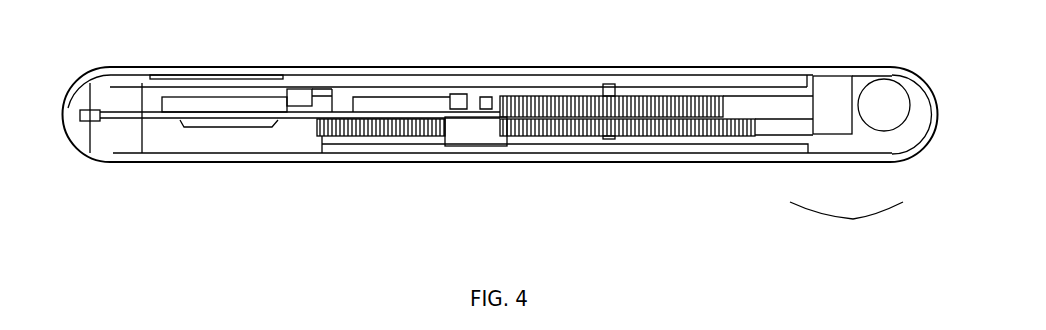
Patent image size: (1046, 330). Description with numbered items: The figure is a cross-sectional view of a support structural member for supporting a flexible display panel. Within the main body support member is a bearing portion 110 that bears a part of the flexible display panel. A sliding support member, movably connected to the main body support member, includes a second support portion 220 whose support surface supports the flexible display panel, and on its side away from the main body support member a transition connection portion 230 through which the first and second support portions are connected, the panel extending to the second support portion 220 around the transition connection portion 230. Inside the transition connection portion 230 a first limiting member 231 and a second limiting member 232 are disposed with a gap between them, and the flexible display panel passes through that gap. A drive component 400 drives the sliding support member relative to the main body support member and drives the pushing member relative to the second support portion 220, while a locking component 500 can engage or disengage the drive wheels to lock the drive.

The bearing portion 110 is at (328, 82).
The second support portion 220 is at (693, 142).
The transition connection portion 230 is at (846, 222).
The first limiting member 231 is at (873, 118).
The second limiting member 232 is at (927, 83).
The drive component 400 is at (578, 113).
The locking component 500 is at (470, 132).